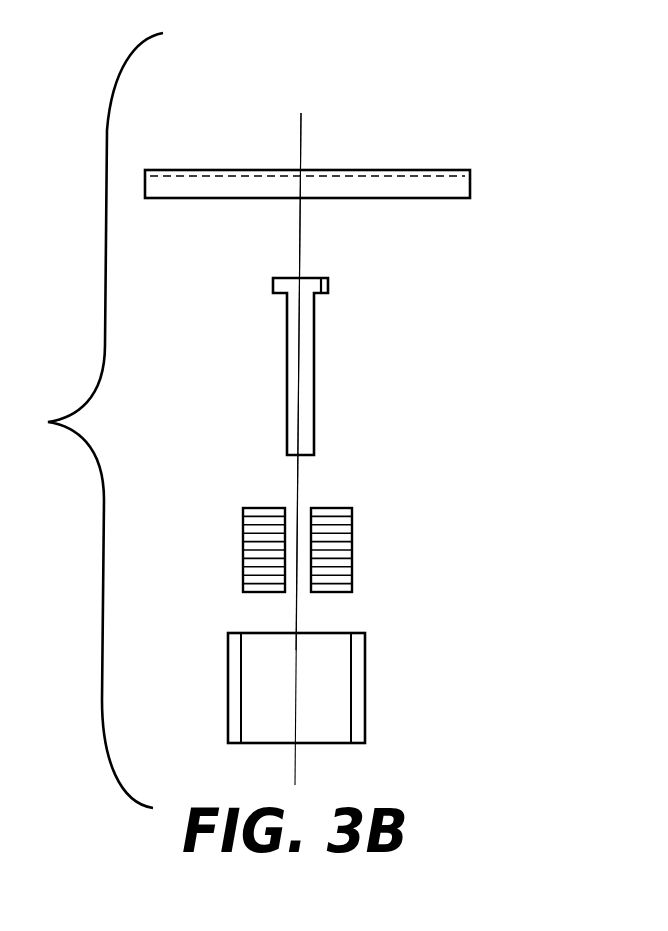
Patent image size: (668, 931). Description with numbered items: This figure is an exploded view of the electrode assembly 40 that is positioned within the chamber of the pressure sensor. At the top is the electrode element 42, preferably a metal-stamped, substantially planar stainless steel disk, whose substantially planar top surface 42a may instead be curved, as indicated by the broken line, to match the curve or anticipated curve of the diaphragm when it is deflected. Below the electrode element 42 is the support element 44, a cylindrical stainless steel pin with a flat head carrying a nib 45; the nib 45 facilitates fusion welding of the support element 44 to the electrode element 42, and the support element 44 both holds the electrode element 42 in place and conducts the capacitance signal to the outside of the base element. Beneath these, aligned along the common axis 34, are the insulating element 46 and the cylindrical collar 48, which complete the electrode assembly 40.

The optical axis 34 is at (301, 155).
The electrode assembly 40 is at (403, 106).
The electrode element 42 is at (416, 184).
The top surface 42a is at (375, 170).
The support element 44 is at (293, 373).
The nib 45 is at (300, 278).
The insulating element 46 is at (264, 555).
The cylindrical collar 48 is at (357, 653).